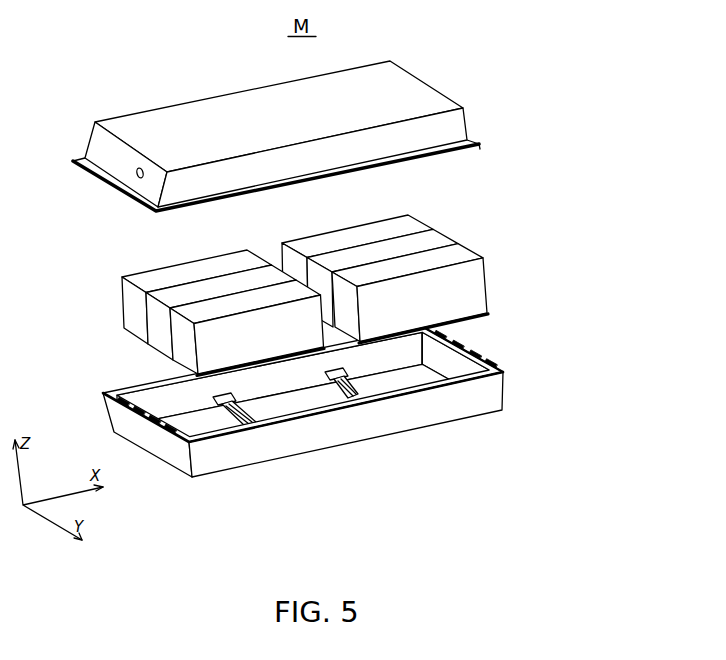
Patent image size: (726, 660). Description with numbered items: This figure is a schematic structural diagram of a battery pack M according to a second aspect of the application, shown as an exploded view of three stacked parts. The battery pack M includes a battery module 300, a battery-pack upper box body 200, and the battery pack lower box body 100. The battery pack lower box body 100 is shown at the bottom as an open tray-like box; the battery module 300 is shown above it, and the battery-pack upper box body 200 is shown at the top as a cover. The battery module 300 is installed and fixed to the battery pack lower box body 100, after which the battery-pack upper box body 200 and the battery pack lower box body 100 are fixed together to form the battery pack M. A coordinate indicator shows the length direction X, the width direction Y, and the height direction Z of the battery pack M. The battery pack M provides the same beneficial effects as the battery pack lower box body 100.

The battery pack lower box body 100 is at (520, 388).
The battery-pack upper box body 200 is at (483, 118).
The battery module 300 is at (495, 275).